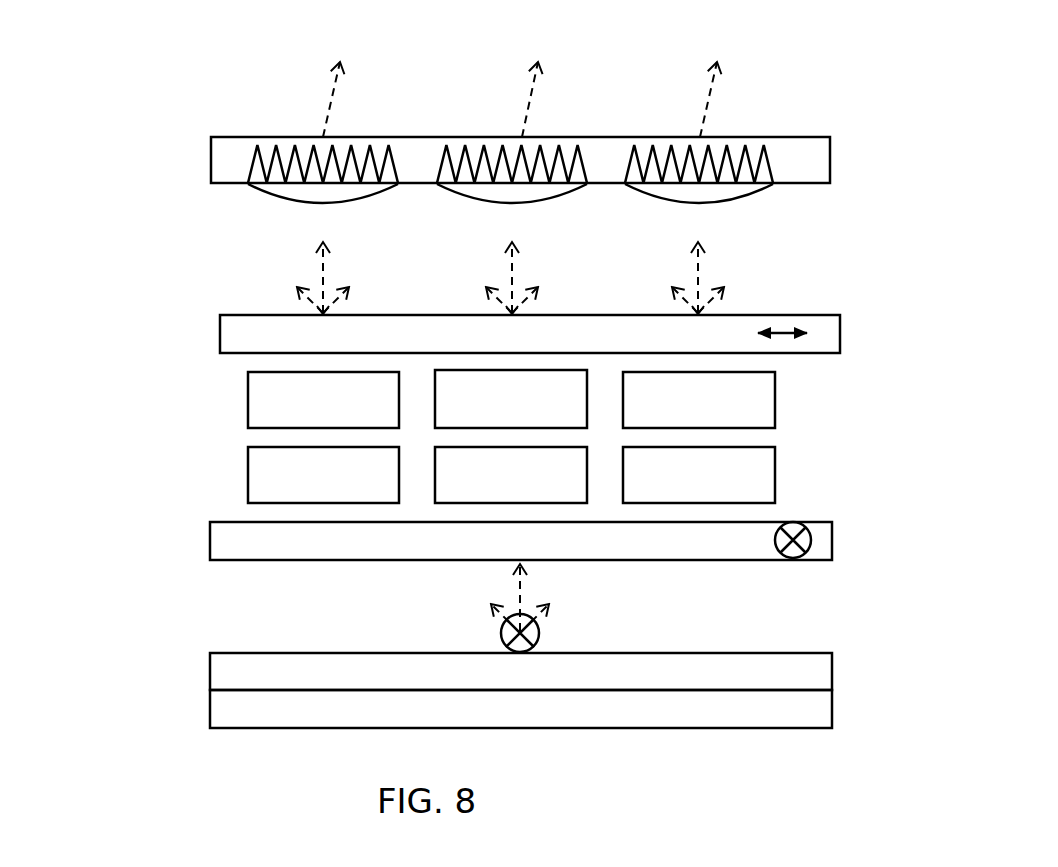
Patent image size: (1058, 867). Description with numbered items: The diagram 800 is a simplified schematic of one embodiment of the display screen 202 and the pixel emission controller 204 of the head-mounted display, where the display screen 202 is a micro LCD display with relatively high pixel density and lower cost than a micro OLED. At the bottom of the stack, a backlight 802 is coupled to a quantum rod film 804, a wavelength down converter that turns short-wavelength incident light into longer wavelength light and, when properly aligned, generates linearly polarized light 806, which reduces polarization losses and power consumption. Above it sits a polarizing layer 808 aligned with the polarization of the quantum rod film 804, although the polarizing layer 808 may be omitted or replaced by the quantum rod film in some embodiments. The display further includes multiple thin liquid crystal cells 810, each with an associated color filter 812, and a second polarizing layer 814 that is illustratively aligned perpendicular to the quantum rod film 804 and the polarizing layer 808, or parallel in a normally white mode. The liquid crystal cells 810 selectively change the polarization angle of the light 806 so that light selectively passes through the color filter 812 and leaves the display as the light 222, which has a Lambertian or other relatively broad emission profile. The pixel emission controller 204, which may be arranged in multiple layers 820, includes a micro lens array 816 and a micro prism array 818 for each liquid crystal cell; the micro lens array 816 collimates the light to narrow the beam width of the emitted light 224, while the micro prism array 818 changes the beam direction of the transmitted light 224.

The diagram 800 is at (868, 86).
The backlight 802 is at (521, 709).
The quantum rod film 804 is at (521, 671).
The linearly polarized light 806 is at (322, 628).
The polarizing layer 808 is at (521, 541).
The liquid crystal cells 810 is at (511, 475).
The color filters 812 is at (511, 399).
The polarizing layer 814 is at (530, 334).
The micro lens array 816 is at (372, 188).
The micro prism array 818 is at (257, 178).
The layers 820 is at (810, 152).
The display screen 202 is at (120, 315).
The pixel emission controller 204 is at (130, 123).
The light 222 is at (244, 265).
The emitted light 224 is at (244, 97).